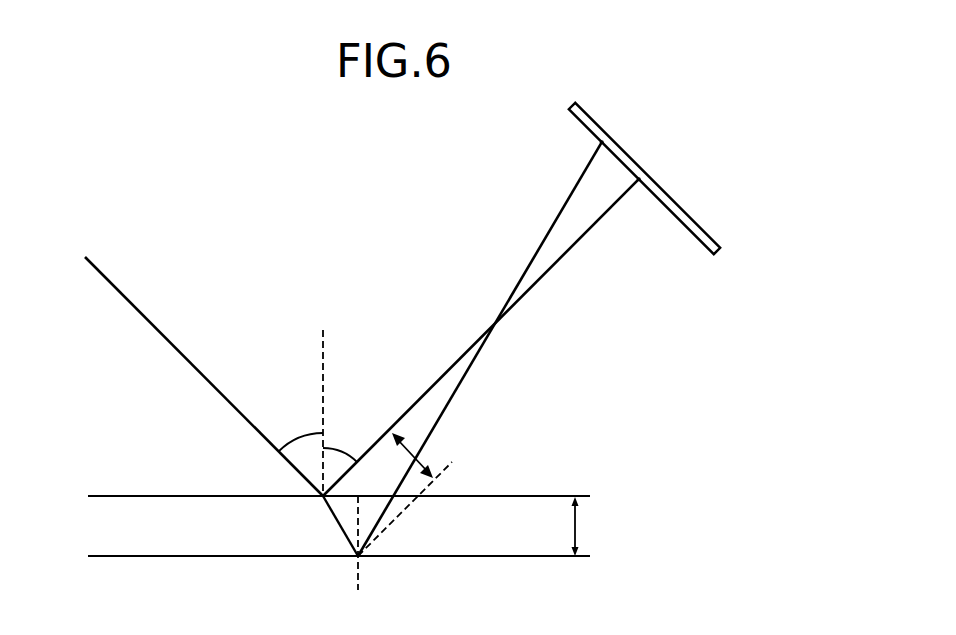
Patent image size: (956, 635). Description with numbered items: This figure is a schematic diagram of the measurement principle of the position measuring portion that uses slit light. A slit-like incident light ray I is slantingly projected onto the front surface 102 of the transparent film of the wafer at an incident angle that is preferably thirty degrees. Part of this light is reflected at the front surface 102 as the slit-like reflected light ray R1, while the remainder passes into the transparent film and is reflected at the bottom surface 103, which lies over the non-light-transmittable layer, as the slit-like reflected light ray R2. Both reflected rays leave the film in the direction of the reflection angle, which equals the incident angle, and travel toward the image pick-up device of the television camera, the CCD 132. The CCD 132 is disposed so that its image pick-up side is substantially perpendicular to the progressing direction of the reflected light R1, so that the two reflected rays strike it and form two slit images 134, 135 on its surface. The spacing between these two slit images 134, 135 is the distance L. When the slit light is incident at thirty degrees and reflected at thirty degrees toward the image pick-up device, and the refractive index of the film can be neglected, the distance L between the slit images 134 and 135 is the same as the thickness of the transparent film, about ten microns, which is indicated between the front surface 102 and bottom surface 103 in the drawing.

The CCD 132 is at (577, 102).
The slit image 135 is at (600, 143).
The slit image 134 is at (640, 182).
The surface 102 is at (547, 497).
The bottom surface 103 is at (505, 558).
The incident light I is at (175, 347).
The reflected light R1 is at (422, 397).
The reflected light R2 is at (437, 420).
The distance L is at (394, 443).